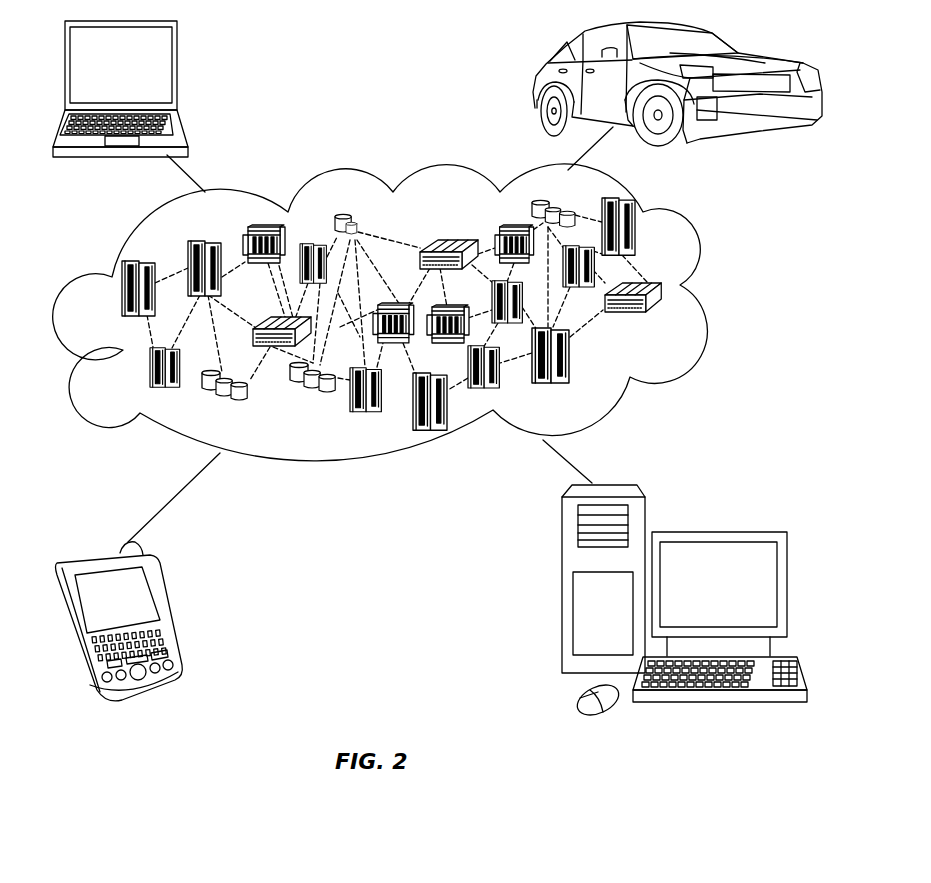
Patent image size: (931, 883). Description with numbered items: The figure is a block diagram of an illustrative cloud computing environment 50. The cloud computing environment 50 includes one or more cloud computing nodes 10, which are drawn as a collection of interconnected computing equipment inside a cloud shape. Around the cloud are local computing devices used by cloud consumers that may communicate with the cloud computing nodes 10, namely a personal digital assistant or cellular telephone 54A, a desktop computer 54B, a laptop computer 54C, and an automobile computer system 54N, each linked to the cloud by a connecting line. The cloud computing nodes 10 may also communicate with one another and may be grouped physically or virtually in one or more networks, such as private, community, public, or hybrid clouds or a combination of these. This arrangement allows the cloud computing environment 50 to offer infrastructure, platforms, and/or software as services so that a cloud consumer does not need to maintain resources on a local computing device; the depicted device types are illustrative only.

The cloud computing environment 50 is at (717, 293).
The cloud computing nodes 10 is at (670, 320).
The personal digital assistant or cellular telephone 54A is at (168, 607).
The desktop computer 54B is at (717, 532).
The laptop computer 54C is at (178, 70).
The automobile computer system 54N is at (538, 86).